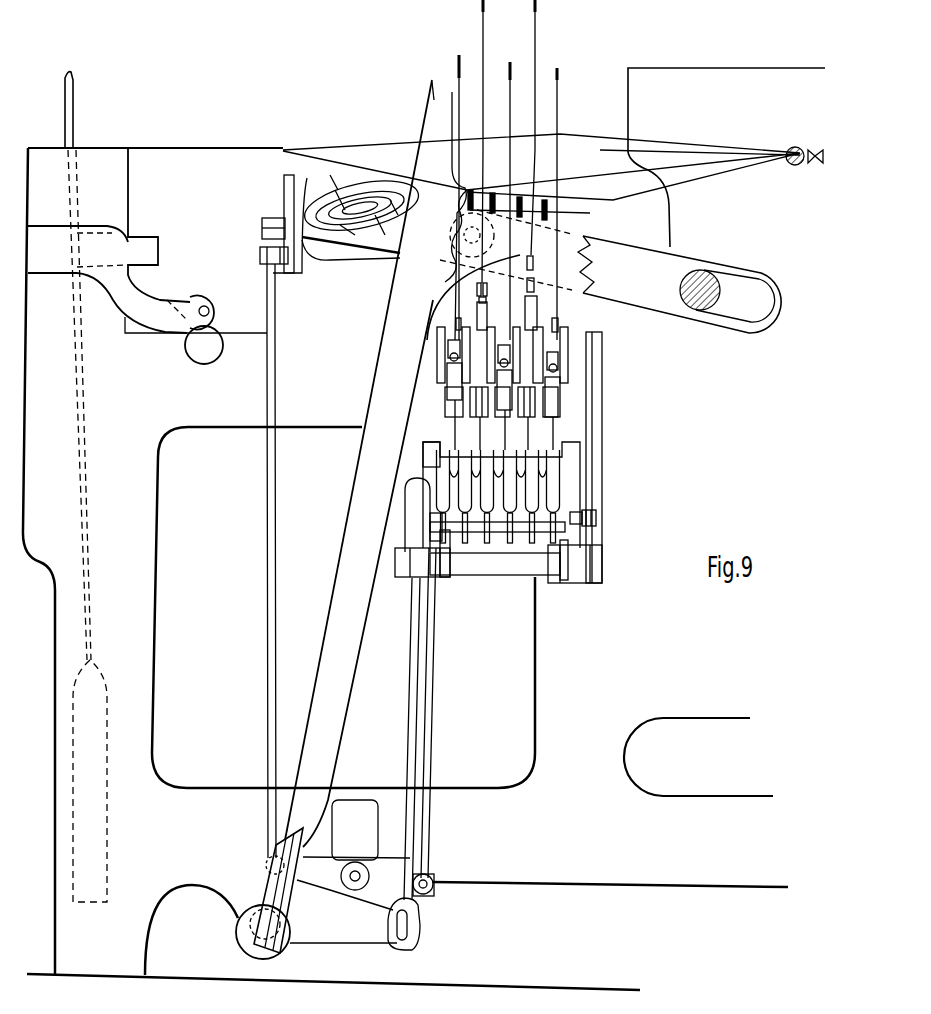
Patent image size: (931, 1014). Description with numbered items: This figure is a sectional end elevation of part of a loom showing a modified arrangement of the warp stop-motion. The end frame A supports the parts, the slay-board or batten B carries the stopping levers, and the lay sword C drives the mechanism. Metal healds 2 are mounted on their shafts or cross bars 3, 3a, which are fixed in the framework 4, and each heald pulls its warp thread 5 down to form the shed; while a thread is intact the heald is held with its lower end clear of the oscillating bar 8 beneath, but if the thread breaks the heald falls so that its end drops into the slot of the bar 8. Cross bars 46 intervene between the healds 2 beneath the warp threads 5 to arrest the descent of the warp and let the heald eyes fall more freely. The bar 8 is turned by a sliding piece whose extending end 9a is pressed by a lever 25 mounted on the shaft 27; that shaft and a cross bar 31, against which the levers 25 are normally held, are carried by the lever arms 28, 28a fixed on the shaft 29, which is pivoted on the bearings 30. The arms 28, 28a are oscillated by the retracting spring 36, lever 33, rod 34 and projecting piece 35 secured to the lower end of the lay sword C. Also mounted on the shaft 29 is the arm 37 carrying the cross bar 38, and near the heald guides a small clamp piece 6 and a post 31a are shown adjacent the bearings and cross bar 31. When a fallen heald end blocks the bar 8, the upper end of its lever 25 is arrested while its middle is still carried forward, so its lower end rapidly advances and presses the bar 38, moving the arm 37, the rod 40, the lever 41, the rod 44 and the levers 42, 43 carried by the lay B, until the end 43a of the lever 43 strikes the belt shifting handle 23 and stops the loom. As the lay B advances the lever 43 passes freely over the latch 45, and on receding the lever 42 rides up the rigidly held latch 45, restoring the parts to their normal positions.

The end frame A is at (424, 529).
The slay-board B is at (368, 212).
The lay sword C is at (337, 708).
The healds 2 is at (562, 120).
The shaft 3 is at (537, 14).
The cross bar 3a is at (596, 262).
The framework 4 is at (528, 332).
The warp threads 5 is at (645, 147).
The needle clamp 6 is at (557, 348).
The oscillating bar 8 is at (618, 380).
The extending ends 9a is at (505, 417).
The belt shifting handle 23 is at (72, 125).
The levers 25 is at (500, 432).
The shaft 27 is at (585, 475).
The lever arm 28 is at (404, 505).
The lever arm 28a is at (572, 497).
The shaft 29 is at (485, 578).
The bearings 30 is at (617, 567).
The cross bar 31 is at (455, 442).
The post 31a is at (566, 580).
The lever 33 is at (428, 595).
The rod 34 is at (408, 762).
The projecting piece 35 is at (340, 932).
The retracting spring 36 is at (598, 518).
The arm 37 is at (445, 580).
The cross bar 38 is at (518, 535).
The rod 40 is at (430, 748).
The lever 41 is at (377, 877).
The lever 42 is at (283, 272).
The lever 43 is at (290, 230).
The end of lever 43 43a is at (270, 218).
The rod 44 is at (266, 557).
The latch 45 is at (218, 268).
The cross bars 46 is at (547, 209).